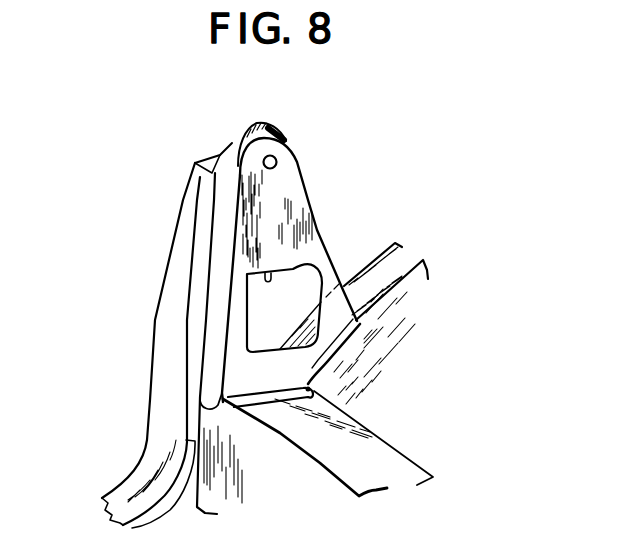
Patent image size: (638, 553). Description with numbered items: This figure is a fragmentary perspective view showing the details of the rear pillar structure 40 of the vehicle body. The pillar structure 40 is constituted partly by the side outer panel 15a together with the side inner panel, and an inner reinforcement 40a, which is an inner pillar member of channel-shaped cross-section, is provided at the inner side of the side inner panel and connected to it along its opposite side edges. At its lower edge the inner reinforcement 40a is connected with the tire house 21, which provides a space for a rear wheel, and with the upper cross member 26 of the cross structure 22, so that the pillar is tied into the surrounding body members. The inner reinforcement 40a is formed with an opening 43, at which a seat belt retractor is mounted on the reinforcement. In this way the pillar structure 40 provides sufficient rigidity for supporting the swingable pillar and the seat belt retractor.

The pillar structure 40 is at (147, 200).
The inner reinforcement 40a is at (210, 358).
The side outer panel 15a is at (160, 322).
The opening 43 is at (270, 273).
The tire house 21 is at (408, 269).
The cross structure 22 is at (397, 415).
The upper cross member 26 is at (398, 463).